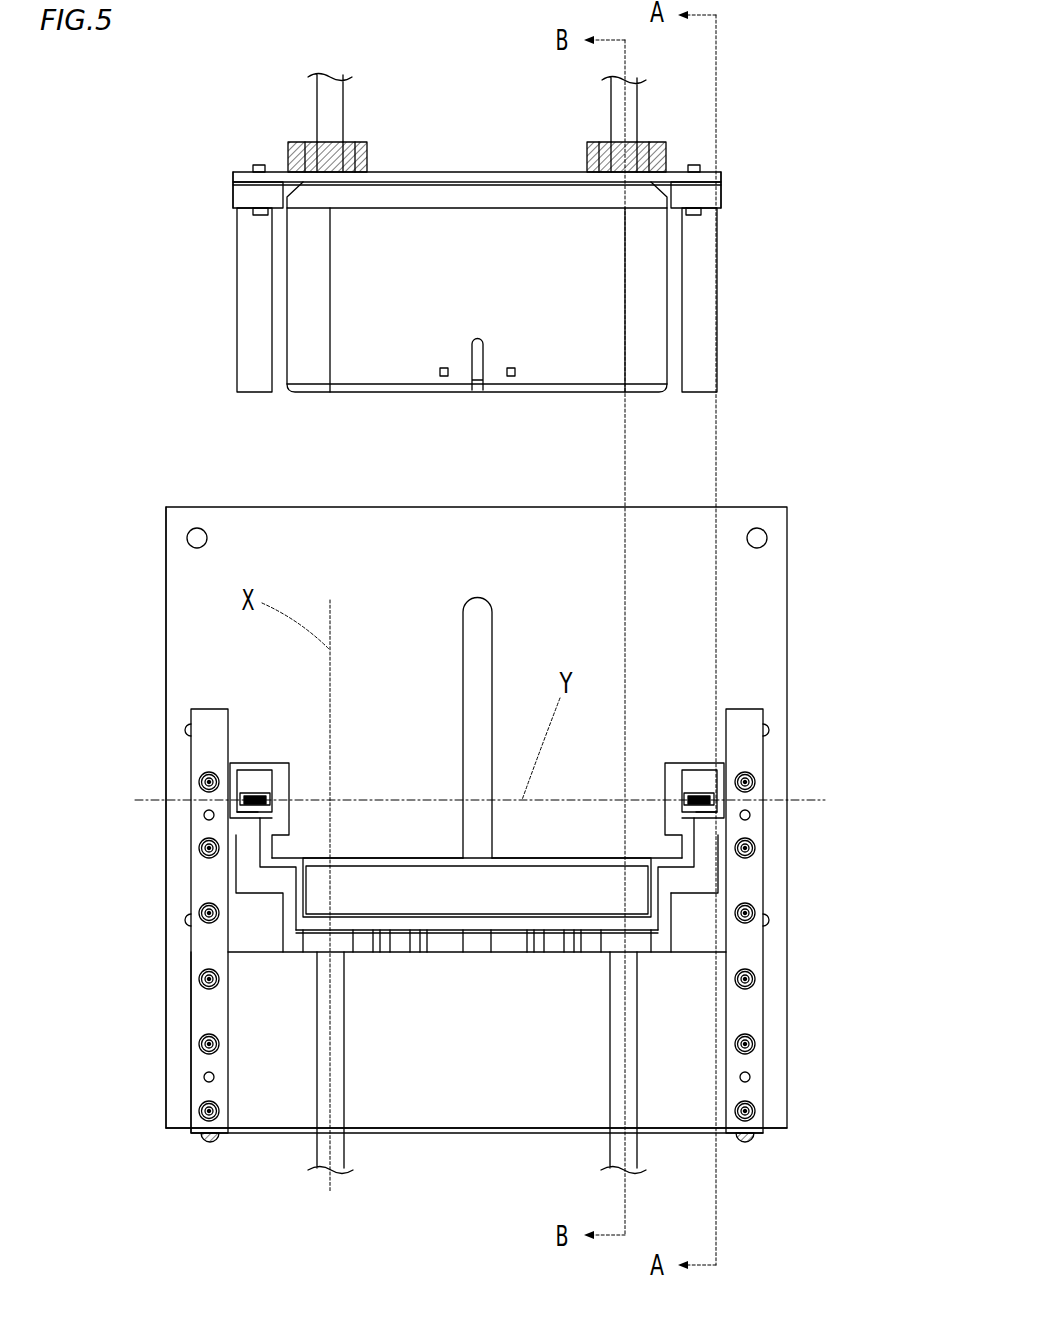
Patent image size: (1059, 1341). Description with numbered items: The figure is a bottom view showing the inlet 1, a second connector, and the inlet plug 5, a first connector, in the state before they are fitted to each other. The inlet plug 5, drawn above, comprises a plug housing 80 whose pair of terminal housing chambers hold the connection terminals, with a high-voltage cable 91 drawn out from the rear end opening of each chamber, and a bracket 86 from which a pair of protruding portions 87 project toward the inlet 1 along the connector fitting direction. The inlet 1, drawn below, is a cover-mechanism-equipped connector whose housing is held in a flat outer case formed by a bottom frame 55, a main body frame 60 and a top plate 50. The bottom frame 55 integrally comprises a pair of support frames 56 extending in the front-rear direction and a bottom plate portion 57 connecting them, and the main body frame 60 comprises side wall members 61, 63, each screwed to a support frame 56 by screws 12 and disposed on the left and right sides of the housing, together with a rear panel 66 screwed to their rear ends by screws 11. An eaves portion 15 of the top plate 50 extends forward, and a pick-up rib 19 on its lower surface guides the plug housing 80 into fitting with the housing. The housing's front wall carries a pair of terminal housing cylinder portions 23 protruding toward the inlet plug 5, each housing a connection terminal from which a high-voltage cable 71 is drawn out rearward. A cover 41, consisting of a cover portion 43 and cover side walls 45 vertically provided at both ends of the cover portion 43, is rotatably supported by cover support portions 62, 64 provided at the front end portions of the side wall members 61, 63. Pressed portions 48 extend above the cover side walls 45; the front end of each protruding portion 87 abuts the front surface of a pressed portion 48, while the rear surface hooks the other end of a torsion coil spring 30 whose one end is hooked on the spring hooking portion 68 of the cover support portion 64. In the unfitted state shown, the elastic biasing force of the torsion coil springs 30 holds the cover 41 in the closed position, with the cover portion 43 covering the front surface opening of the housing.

The inlet 1 is at (146, 826).
The inlet plug 5 is at (176, 295).
The screws 11 is at (212, 1145).
The screws 12 is at (205, 782).
The eaves portion 15 is at (765, 605).
The pick-up rib 19 is at (470, 640).
The terminal housing cylinder portions 23 is at (353, 948).
The torsion coil springs 30 is at (259, 793).
The cover 41 is at (426, 858).
The cover portion 43 is at (540, 885).
The cover side walls 45 is at (268, 848).
The pressed portion 48 is at (272, 797).
The top plate 50 is at (166, 556).
The bottom frame 55 is at (460, 1082).
The support frames 56 is at (200, 748).
The bottom plate portion 57 is at (268, 1107).
The main body frame 60 is at (690, 930).
The side wall member 61 is at (695, 898).
The cover support portion 62 is at (250, 760).
The side wall member 63 is at (252, 890).
The cover support portion 64 is at (705, 767).
The rear panel 66 is at (513, 1130).
The spring hooking portion 68 is at (252, 826).
The high-voltage cable 71 is at (345, 1148).
The plug housing 80 is at (451, 240).
The bracket 86 is at (237, 246).
The protruding portions 87 is at (250, 333).
The high-voltage cable 91 is at (322, 103).